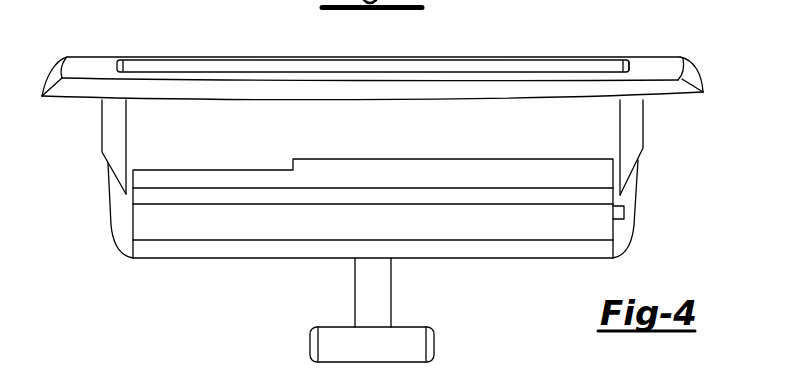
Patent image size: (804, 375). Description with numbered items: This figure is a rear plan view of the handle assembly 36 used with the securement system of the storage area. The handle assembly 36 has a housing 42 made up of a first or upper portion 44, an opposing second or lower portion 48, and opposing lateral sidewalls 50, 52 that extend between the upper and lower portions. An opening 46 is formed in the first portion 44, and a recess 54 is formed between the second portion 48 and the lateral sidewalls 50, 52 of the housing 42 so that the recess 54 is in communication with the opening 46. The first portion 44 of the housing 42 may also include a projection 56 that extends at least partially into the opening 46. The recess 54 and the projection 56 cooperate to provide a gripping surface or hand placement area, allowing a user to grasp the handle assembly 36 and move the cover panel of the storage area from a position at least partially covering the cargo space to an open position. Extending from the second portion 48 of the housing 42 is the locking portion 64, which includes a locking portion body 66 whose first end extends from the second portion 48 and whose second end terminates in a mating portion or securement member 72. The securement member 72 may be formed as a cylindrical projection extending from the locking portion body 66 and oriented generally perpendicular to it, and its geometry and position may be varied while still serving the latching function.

The handle assembly 36 is at (688, 42).
The housing 42 is at (93, 46).
The first or upper portion 44 is at (655, 64).
The opening 46 is at (187, 64).
The second or lower portion 48 is at (203, 258).
The lateral sidewall 50 is at (108, 188).
The lateral sidewall 52 is at (637, 186).
The recess 54 is at (384, 138).
The projection 56 is at (247, 82).
The locking portion 64 is at (437, 343).
The locking portion body 66 is at (392, 295).
The mating portion or securement member 72 is at (311, 344).